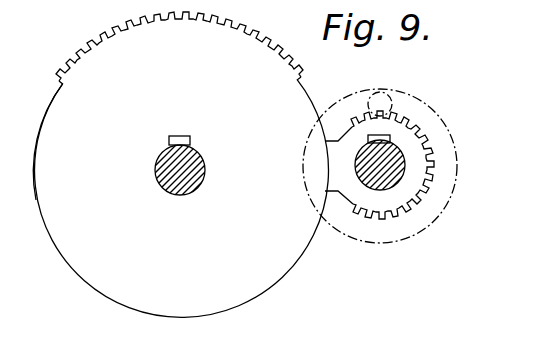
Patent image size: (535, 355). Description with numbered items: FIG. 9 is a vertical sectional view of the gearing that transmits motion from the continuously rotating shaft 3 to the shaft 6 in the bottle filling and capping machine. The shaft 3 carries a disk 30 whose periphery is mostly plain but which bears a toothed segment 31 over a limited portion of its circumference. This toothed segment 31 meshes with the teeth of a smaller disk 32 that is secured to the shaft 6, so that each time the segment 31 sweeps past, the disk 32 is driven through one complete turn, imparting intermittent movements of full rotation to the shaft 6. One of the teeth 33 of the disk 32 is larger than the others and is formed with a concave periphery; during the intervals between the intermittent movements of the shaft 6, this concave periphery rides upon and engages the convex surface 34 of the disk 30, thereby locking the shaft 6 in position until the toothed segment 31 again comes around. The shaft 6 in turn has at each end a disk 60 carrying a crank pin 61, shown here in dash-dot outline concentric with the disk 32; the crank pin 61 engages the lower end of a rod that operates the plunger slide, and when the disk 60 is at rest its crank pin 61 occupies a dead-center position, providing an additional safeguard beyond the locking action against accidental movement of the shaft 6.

The shaft 3 is at (176, 170).
The shaft 6 is at (383, 168).
The disk 30 is at (181, 197).
The toothed segment 31 is at (179, 46).
The disk 32 is at (417, 160).
The tooth 33 is at (339, 165).
The convex surface 34 is at (74, 270).
The disk 60 is at (438, 123).
The crank pin 61 is at (381, 102).